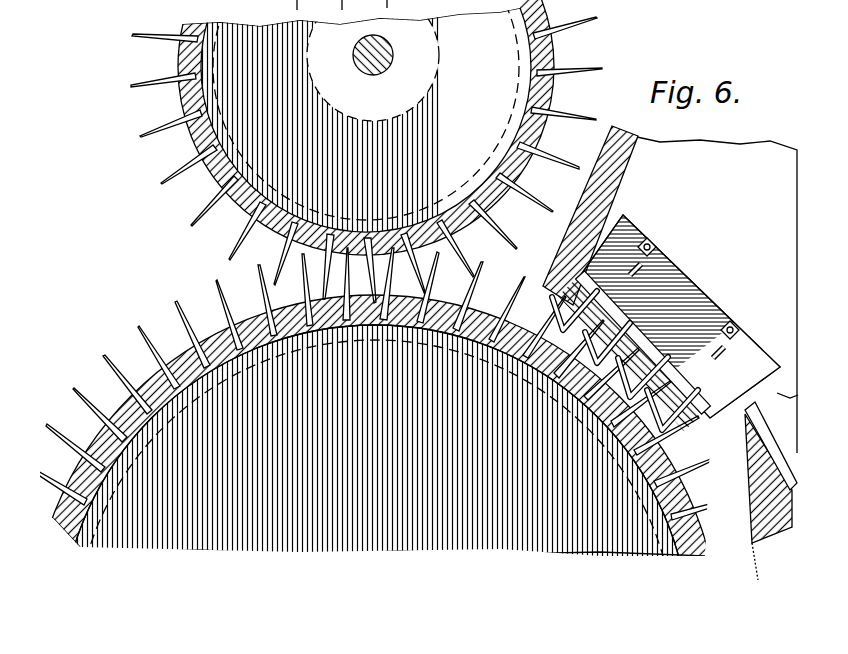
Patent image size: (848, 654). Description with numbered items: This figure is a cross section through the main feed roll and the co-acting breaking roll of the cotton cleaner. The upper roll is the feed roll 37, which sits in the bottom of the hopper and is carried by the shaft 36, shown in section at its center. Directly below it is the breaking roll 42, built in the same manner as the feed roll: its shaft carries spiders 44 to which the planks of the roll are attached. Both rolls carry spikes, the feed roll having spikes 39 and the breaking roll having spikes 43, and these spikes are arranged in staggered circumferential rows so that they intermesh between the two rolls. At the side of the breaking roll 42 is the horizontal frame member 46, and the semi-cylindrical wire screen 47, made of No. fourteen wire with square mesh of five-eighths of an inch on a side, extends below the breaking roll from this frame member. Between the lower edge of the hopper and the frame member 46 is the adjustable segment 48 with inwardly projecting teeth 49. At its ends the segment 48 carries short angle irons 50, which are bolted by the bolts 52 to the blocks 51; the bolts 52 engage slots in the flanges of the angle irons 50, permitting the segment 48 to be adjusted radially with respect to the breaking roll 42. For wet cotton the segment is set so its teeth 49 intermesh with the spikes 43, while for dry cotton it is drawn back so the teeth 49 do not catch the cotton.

The shaft 36 is at (388, 62).
The feed roll 37 is at (224, 186).
The spikes 39 is at (248, 237).
The breaking roll 42 is at (242, 323).
The spikes 43 is at (187, 343).
The spiders 44 is at (275, 548).
The horizontal frame member 46 is at (762, 458).
The semi-cylindrical wire screen 47 is at (757, 582).
The adjustable segment 48 is at (662, 322).
The teeth 49 is at (680, 422).
The angle irons 50 is at (630, 232).
The blocks 51 is at (670, 289).
The bolts 52 is at (655, 246).